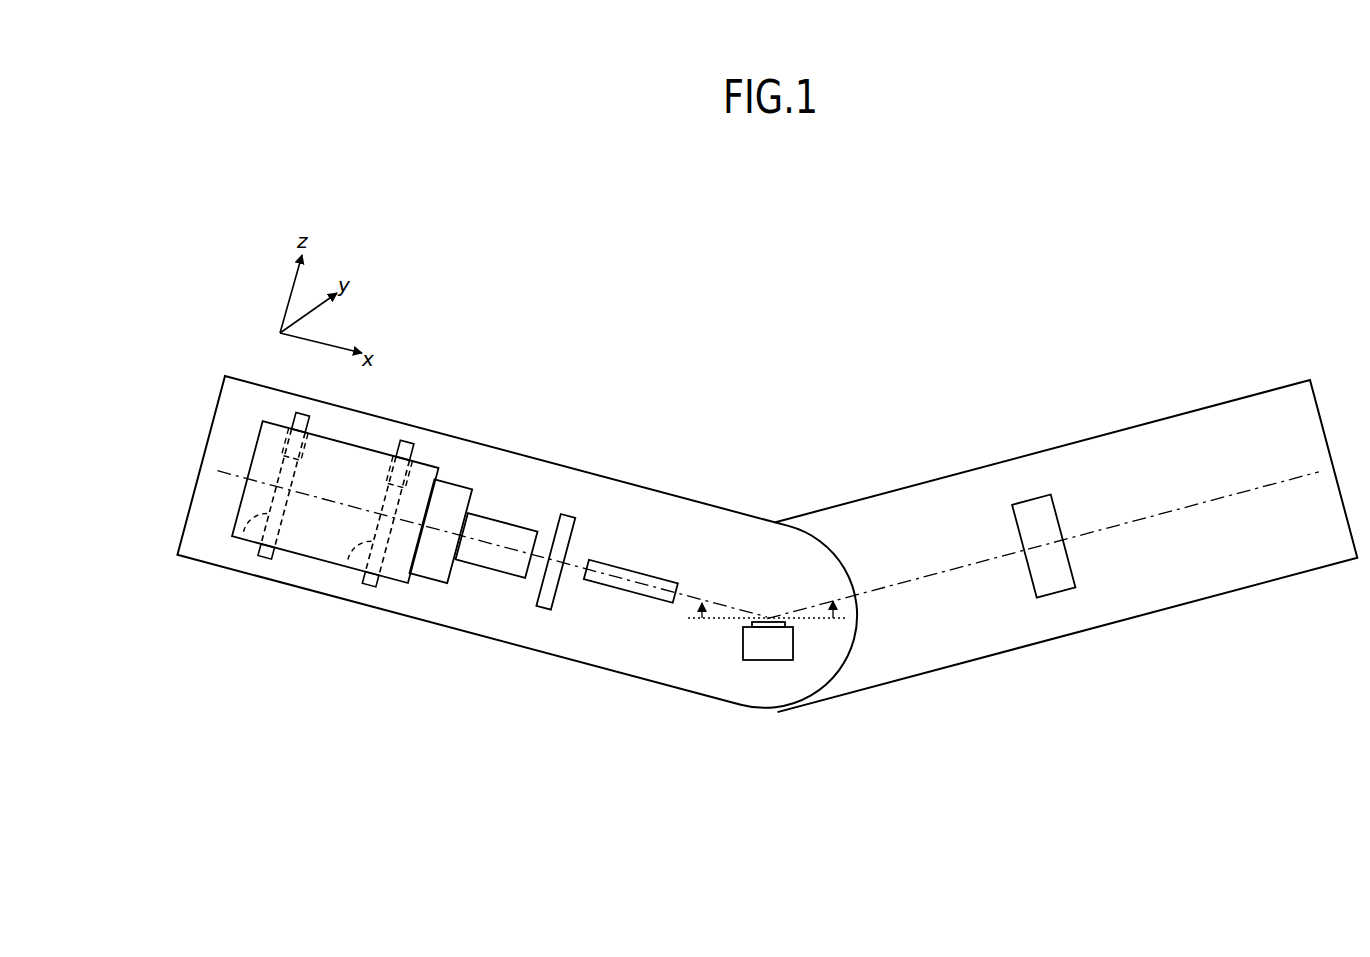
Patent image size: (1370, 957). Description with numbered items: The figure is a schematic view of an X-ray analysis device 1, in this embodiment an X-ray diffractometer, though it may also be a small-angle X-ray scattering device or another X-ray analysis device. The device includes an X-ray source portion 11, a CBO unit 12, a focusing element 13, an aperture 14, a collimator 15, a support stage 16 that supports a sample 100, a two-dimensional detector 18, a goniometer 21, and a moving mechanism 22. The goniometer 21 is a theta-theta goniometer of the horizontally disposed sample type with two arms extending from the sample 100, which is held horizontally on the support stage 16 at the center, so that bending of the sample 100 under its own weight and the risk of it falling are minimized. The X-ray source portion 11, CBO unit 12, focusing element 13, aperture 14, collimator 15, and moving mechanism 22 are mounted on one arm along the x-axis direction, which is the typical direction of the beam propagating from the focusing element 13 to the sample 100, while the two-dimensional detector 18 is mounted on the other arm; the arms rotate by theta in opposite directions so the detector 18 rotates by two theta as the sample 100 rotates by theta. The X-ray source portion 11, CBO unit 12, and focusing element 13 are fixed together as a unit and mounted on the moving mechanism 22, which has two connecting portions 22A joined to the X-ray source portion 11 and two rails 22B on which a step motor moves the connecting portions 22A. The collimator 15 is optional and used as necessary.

The X-ray analysis device 1 is at (872, 291).
The X-ray source portion 11 is at (258, 450).
The CBO unit 12 is at (436, 574).
The focusing element 13 is at (500, 528).
The aperture 14 is at (568, 518).
The collimator 15 is at (640, 577).
The support stage 16 is at (745, 648).
The two-dimensional detector 18 is at (1055, 512).
The goniometer 21 is at (612, 664).
The moving mechanism 22 is at (262, 561).
The connecting portion 22A is at (400, 500).
The rail 22B is at (240, 541).
The sample 100 is at (767, 617).